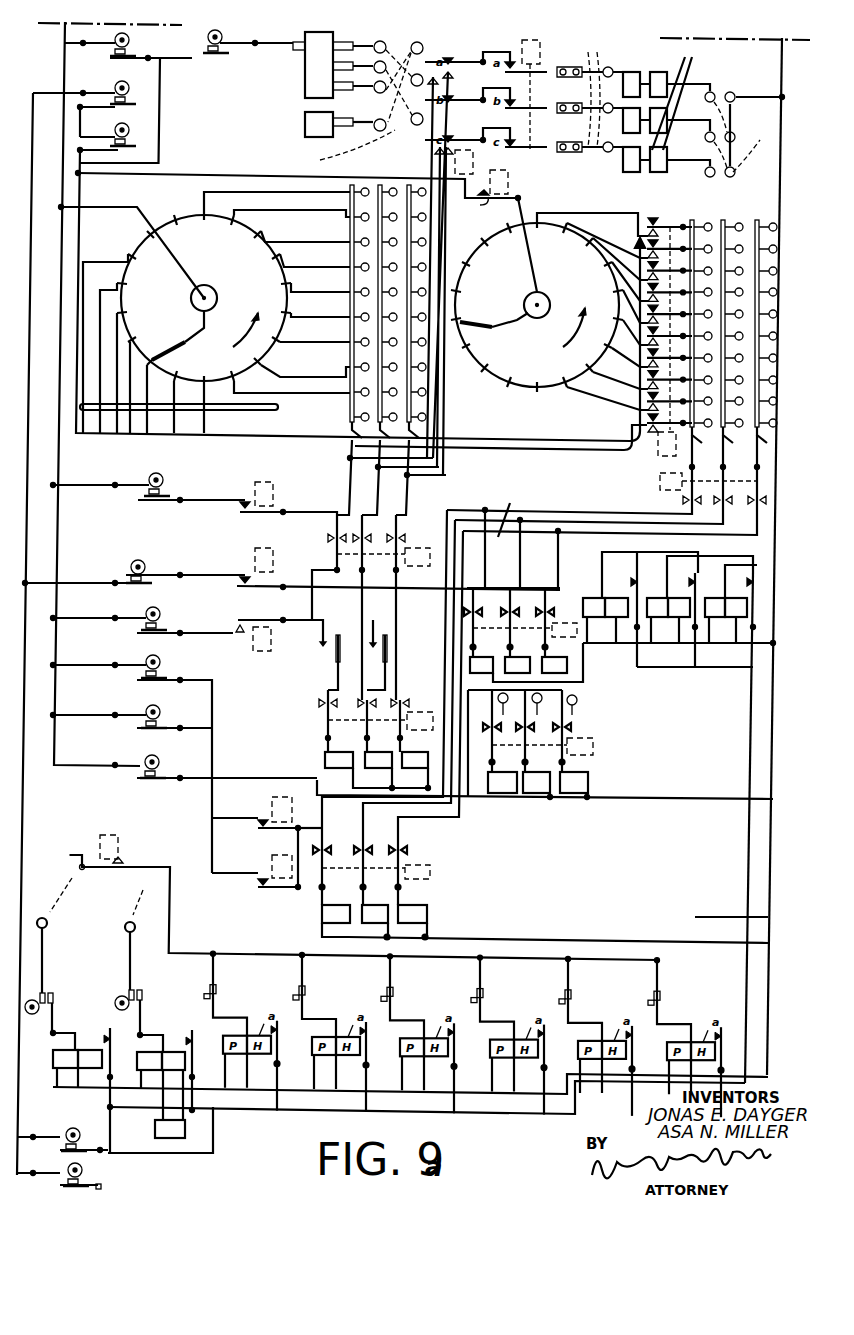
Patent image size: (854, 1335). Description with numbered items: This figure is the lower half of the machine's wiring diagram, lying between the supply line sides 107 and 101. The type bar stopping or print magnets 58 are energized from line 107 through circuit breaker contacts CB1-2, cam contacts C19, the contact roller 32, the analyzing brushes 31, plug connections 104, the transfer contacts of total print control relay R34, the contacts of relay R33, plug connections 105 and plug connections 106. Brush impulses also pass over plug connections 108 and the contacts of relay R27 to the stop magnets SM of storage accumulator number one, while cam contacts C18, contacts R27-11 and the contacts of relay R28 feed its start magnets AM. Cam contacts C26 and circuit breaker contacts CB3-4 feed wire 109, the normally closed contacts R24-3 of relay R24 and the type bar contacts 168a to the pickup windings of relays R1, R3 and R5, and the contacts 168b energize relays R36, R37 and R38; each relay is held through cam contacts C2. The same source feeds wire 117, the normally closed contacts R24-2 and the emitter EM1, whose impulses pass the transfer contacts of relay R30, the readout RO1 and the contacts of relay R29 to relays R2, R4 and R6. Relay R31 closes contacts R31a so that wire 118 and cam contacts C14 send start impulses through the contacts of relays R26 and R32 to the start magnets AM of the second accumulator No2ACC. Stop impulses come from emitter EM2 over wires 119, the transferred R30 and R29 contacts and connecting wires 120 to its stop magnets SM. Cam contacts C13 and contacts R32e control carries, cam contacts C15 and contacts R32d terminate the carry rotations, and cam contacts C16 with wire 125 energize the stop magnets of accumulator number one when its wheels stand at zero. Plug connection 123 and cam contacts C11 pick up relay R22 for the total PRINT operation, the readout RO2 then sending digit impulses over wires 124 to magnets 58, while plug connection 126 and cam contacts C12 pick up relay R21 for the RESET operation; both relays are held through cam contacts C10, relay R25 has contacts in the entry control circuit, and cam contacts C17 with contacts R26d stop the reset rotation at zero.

The line 107 is at (58, 76).
The wire 109 is at (80, 189).
The wire 117 is at (205, 175).
The wire 118 is at (162, 151).
The wires 119 is at (188, 412).
The connecting wires 120 is at (426, 685).
The plug connection 123 is at (251, 522).
The wires 124 is at (450, 469).
The wire 125 is at (462, 805).
The plug connection 126 is at (71, 897).
The line 101 is at (779, 180).
The plug connections 104 is at (423, 46).
The plug connections 105 is at (605, 91).
The plug connections 106 is at (735, 118).
The plug connections 108 is at (628, 724).
The contact roller 32 is at (308, 114).
The brushes 31 is at (333, 118).
The type bar stopping magnets 58 is at (655, 70).
The circuit breaker contacts CB1-2 is at (132, 54).
The cam contacts C19 is at (232, 55).
The cam contacts C26 is at (135, 106).
The circuit breaker contacts CB3-4 is at (132, 146).
The relay R33 is at (542, 52).
The total print control relay R34 is at (473, 163).
The relay R24 is at (508, 183).
The relay contacts R24-2 is at (476, 207).
The relay contacts R24-3 is at (122, 872).
The readout RO2 is at (355, 183).
The readout RO1 is at (688, 220).
The emitter EM2 is at (175, 291).
The emitter EM1 is at (537, 305).
The relay R30 is at (655, 445).
The relay R29 is at (660, 483).
The cam contacts C14 is at (168, 498).
The entry control relay R31 is at (274, 490).
The relay contacts R31a is at (240, 510).
The relay R27 is at (266, 547).
The relay contacts R27-11 is at (230, 580).
The cam contacts C18 is at (150, 575).
The cam contacts C13 is at (160, 626).
The carry control relay R32 is at (272, 640).
The relay contacts R32e is at (311, 657).
The cam contacts C15 is at (160, 674).
The cam contacts C16 is at (160, 724).
The cam contacts C17 is at (158, 776).
The relay R26 is at (418, 545).
The accumulator No. 2 No2ACC is at (267, 712).
The start magnets AM is at (360, 760).
The relay R28 is at (563, 620).
The relay R2 is at (640, 609).
The relay R4 is at (700, 611).
The relay R6 is at (679, 613).
The stop magnets SM is at (590, 783).
The relay contacts R32d is at (267, 852).
The relay contacts R26d is at (258, 882).
The reset key RESET is at (67, 955).
The print key PRINT is at (138, 932).
The cam contacts C12 is at (43, 1000).
The cam contacts C11 is at (135, 998).
The relay R21 is at (75, 1035).
The relay R22 is at (165, 1045).
The relay R25 is at (155, 1128).
The cam contacts C2 is at (55, 1133).
The cam contacts C10 is at (88, 1184).
The type bar contacts 168a is at (217, 986).
The type bar contacts 168b is at (485, 990).
The relay R1 is at (242, 1030).
The relay R3 is at (331, 1033).
The relay R5 is at (419, 1034).
The relay R36 is at (509, 1035).
The relay R37 is at (597, 1036).
The relay R38 is at (686, 1037).